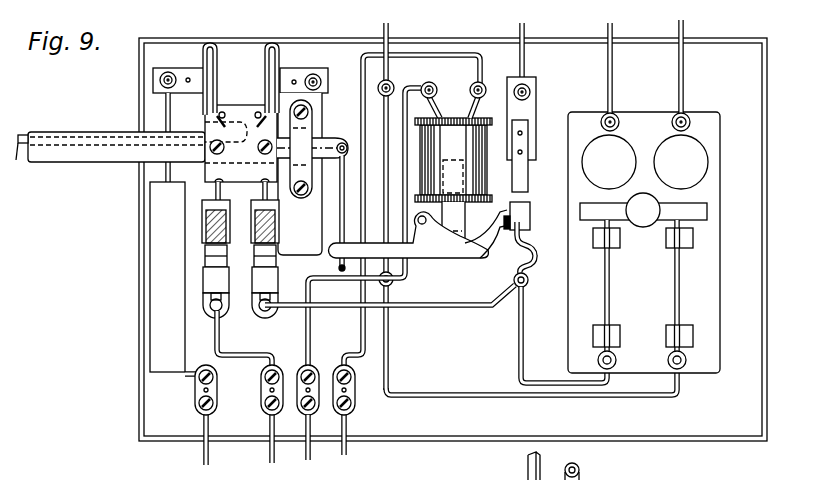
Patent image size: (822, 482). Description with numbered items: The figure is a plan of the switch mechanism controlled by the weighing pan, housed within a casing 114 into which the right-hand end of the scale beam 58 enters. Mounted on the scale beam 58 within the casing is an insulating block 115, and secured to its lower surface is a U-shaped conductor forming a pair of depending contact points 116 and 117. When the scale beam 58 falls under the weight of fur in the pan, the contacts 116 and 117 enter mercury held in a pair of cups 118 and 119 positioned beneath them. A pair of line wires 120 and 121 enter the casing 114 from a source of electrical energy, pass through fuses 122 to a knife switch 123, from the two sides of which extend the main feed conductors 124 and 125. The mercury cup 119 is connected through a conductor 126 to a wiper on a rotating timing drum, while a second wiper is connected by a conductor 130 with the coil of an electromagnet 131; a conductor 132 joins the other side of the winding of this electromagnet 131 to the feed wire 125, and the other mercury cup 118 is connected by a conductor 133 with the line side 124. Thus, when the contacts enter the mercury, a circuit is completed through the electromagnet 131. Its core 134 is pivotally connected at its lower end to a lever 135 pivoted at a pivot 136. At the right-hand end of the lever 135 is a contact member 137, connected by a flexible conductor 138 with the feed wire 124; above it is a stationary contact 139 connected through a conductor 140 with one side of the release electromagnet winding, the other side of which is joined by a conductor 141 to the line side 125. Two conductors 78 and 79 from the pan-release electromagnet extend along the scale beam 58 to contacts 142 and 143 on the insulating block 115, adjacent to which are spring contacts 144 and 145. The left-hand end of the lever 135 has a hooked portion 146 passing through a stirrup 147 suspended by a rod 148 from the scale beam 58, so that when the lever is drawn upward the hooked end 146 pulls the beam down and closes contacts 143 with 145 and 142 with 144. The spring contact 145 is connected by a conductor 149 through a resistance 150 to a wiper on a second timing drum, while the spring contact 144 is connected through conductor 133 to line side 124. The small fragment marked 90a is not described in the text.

The scale beam 58 is at (78, 160).
The conductor 78 is at (22, 147).
The conductor 79 is at (24, 134).
The fragment 90a is at (531, 467).
The casing 114 is at (715, 442).
The insulating block 115 is at (238, 108).
The contact point 116 is at (280, 200).
The contact point 117 is at (210, 198).
The mercury cup 118 is at (275, 235).
The mercury cup 119 is at (205, 232).
The line wire 120 is at (685, 87).
The line wire 121 is at (614, 62).
The fuses 122 is at (700, 175).
The knife switch 123 is at (675, 288).
The conductor 124 is at (518, 355).
The conductor 125 is at (478, 396).
The conductor 126 is at (262, 340).
The conductor 130 is at (450, 55).
The electromagnet 131 is at (452, 125).
The conductor 132 is at (423, 86).
The conductor 133 is at (428, 308).
The core 134 is at (462, 214).
The lever 135 is at (465, 243).
The pivot 136 is at (436, 228).
The contact member 137 is at (530, 210).
The flexible conductor 138 is at (530, 236).
The stationary contact 139 is at (528, 180).
The conductor 140 is at (526, 70).
The conductor 141 is at (392, 28).
The contact 142 is at (268, 60).
The contact 143 is at (222, 108).
The spring contact 144 is at (262, 130).
The spring contact 145 is at (215, 128).
The hooked portion 146 is at (328, 250).
The stirrup 147 is at (340, 272).
The rod 148 is at (348, 143).
The conductor 149 is at (160, 104).
The resistance 150 is at (175, 278).